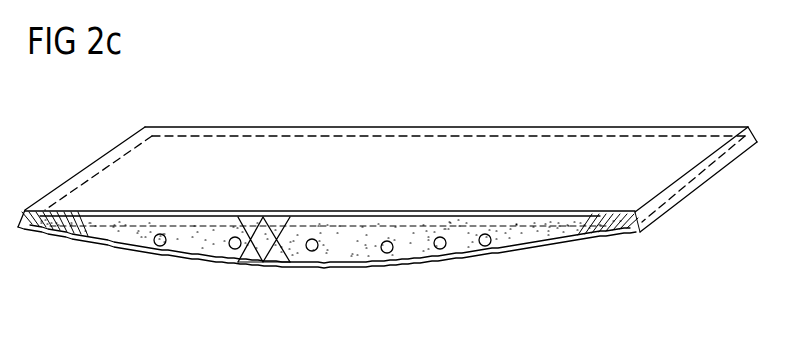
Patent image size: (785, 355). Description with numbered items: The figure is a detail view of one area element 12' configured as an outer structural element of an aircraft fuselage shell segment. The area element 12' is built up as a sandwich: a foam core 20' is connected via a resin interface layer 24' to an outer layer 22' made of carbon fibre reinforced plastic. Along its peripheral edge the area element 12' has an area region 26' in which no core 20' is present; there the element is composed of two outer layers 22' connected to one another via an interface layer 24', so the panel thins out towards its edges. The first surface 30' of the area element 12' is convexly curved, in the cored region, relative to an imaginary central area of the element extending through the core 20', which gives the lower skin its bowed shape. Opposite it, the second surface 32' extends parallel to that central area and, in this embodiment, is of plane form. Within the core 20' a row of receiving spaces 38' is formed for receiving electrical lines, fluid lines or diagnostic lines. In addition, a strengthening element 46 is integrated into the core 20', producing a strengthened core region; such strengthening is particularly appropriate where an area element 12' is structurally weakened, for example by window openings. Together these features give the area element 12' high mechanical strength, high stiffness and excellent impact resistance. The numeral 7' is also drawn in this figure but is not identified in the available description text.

The area element 12' is at (451, 92).
The cover plate 7' is at (454, 156).
The second surface 32' is at (124, 154).
The area region 26' is at (331, 195).
The core 20' is at (330, 188).
The outer layer 22' is at (327, 240).
The interface layer 24' is at (330, 233).
The receiving space 38' is at (314, 271).
The strengthening element 46 is at (246, 204).
The first surface 30' is at (264, 292).